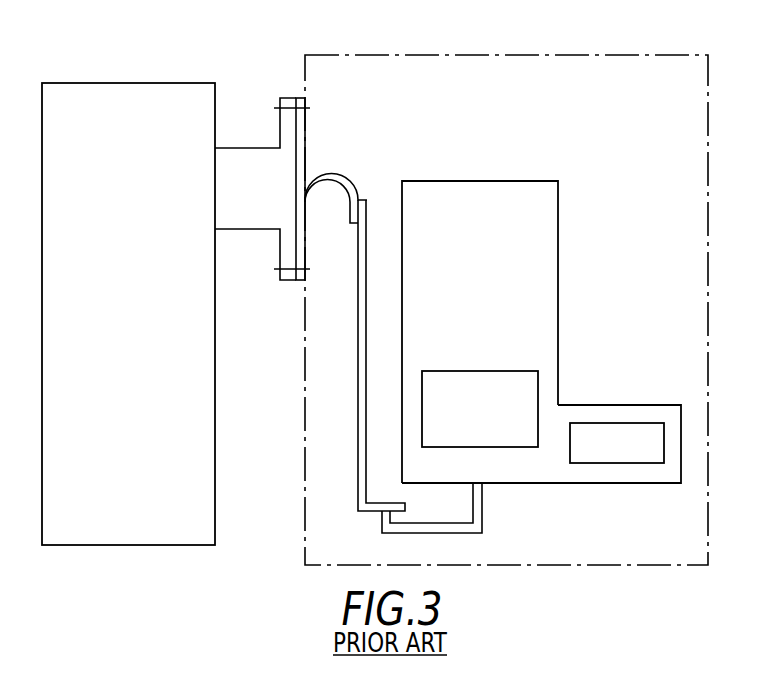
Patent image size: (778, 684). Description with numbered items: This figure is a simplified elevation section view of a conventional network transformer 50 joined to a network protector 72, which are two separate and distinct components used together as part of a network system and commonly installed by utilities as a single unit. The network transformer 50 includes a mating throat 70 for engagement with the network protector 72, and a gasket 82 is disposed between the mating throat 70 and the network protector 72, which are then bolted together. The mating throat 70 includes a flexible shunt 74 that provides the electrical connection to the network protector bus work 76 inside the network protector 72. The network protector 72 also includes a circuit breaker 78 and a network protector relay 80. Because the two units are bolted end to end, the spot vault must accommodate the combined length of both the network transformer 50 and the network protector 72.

The network transformer 50 is at (94, 83).
The mating throat 70 is at (263, 308).
The network protector 72 is at (636, 43).
The flexible shunt 74 is at (340, 153).
The network protector bus work 76 is at (393, 262).
The circuit breaker 78 is at (468, 371).
The network protector relay 80 is at (633, 480).
The gasket 82 is at (301, 97).